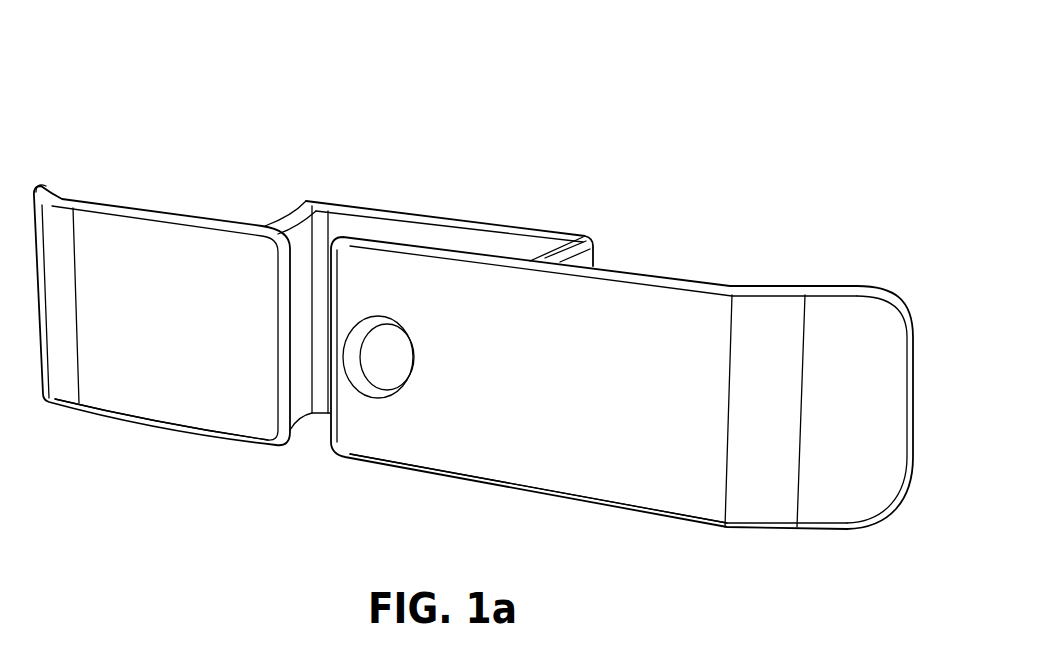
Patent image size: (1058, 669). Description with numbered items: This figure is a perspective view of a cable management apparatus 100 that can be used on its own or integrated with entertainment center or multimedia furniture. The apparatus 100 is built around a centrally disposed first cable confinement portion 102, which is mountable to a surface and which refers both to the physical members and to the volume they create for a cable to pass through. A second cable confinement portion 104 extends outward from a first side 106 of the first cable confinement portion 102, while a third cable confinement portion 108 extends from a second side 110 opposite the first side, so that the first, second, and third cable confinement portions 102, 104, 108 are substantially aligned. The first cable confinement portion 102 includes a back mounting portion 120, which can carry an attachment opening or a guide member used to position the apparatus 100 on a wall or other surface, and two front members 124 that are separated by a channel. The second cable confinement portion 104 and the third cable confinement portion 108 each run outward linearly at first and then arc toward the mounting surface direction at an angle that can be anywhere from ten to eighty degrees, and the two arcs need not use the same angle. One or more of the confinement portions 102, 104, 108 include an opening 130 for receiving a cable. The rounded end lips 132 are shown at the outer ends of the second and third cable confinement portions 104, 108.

The cable management apparatus 100 is at (568, 112).
The first cable confinement portion 102 is at (425, 227).
The second cable confinement portion 104 is at (668, 297).
The first side 106 is at (549, 234).
The third cable confinement portion 108 is at (147, 225).
The second side 110 is at (283, 227).
The back mounting portion 120 is at (512, 225).
The front members 124 is at (255, 437).
The opening 130 is at (394, 328).
The rounded end lip 132 is at (38, 184).